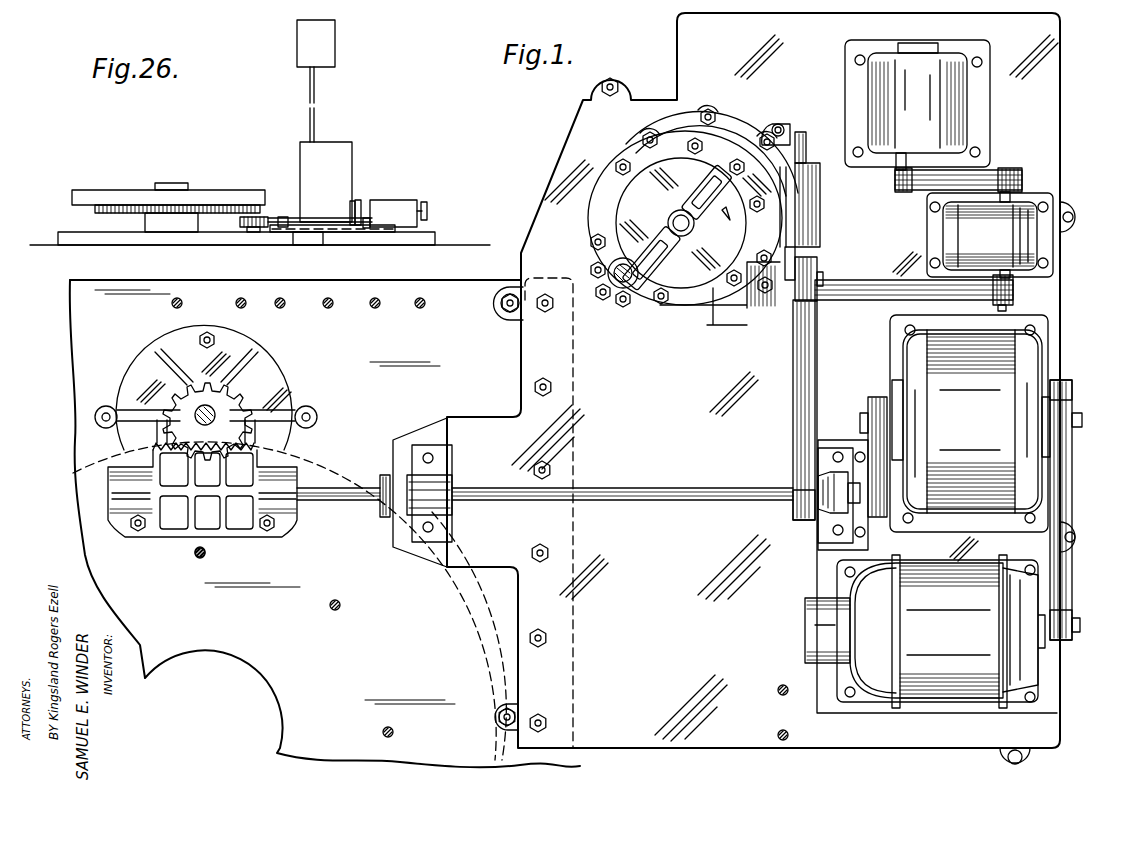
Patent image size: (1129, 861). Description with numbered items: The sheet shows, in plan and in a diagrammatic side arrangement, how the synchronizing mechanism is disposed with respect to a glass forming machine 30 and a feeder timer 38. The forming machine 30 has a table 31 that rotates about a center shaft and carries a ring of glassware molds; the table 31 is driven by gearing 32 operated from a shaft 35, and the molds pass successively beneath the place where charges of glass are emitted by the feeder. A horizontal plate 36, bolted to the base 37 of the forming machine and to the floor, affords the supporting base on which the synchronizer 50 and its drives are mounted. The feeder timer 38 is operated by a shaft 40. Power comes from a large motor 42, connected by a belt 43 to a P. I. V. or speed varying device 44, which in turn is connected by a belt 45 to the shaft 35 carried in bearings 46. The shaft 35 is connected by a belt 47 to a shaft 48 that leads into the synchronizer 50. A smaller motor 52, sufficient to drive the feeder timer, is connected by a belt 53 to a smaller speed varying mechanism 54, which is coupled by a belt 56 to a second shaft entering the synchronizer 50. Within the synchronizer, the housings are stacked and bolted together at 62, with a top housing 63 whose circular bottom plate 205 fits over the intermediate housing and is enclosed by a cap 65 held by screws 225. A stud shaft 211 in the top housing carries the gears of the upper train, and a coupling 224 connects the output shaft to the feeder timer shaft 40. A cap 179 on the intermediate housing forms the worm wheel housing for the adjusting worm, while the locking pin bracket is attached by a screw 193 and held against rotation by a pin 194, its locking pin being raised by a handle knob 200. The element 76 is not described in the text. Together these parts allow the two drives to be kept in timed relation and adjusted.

In FIG. 26, the glass forming machine 30 is at (168, 178).
In FIG. 1, the glass forming machine 30 is at (232, 697).
In FIG. 26, the table 31 is at (236, 190).
In FIG. 26, the gearing 32 is at (255, 212).
In FIG. 1, the gearing 32 is at (248, 405).
In FIG. 26, the shaft 35 is at (314, 218).
In FIG. 1, the shaft 35 is at (332, 500).
In FIG. 26, the horizontal plate 36 is at (307, 240).
In FIG. 1, the horizontal plate 36 is at (548, 212).
In FIG. 26, the base 37 is at (74, 240).
In FIG. 1, the base 37 is at (452, 293).
In FIG. 26, the feeder timer 38 is at (294, 44).
In FIG. 26, the shaft 40 is at (308, 98).
In FIG. 1, the shaft 40 is at (620, 285).
In FIG. 26, the large motor 42 is at (405, 200).
In FIG. 1, the large motor 42 is at (945, 665).
In FIG. 26, the belt 43 is at (424, 203).
In FIG. 1, the belt 43 is at (1056, 540).
In FIG. 1, the speed varying device 44 is at (930, 368).
In FIG. 1, the belt 45 is at (873, 442).
In FIG. 26, the bearings 46 is at (283, 216).
In FIG. 1, the bearings 46 is at (452, 487).
In FIG. 26, the belt 47 is at (359, 203).
In FIG. 1, the belt 47 is at (792, 405).
In FIG. 26, the shaft 48 is at (352, 200).
In FIG. 1, the shaft 48 is at (822, 272).
In FIG. 26, the synchronizer 50 is at (338, 138).
In FIG. 1, the synchronizer 50 is at (707, 217).
In FIG. 1, the small motor 52 is at (887, 78).
In FIG. 1, the belt 53 is at (1007, 170).
In FIG. 1, the speed varying mechanism 54 is at (1020, 242).
In FIG. 1, the belt 56 is at (872, 300).
In FIG. 1, the bolts 62 is at (650, 133).
In FIG. 1, the top housing 63 is at (677, 120).
In FIG. 1, the cap 65 is at (712, 310).
In FIG. 1, the flange 76 is at (744, 327).
In FIG. 1, the cap 179 is at (812, 220).
In FIG. 1, the screw 193 is at (807, 141).
In FIG. 1, the pin 194 is at (808, 176).
In FIG. 1, the handle knob 200 is at (786, 128).
In FIG. 1, the bottom plate 205 is at (768, 130).
In FIG. 1, the stud shaft 211 is at (670, 214).
In FIG. 1, the coupling 224 is at (637, 292).
In FIG. 1, the screws 225 is at (614, 167).